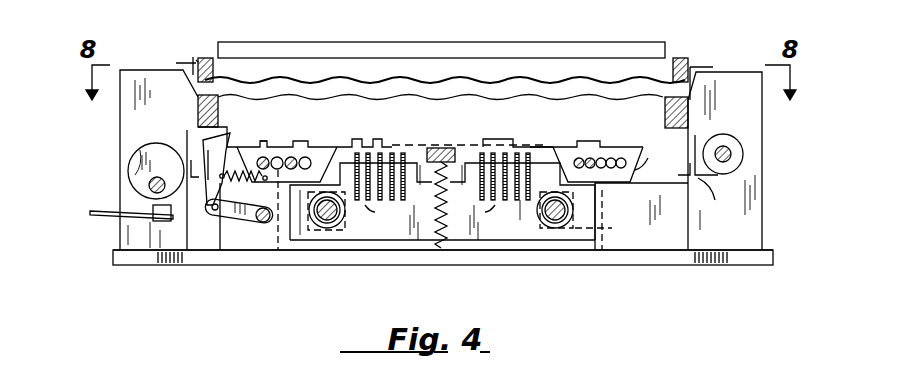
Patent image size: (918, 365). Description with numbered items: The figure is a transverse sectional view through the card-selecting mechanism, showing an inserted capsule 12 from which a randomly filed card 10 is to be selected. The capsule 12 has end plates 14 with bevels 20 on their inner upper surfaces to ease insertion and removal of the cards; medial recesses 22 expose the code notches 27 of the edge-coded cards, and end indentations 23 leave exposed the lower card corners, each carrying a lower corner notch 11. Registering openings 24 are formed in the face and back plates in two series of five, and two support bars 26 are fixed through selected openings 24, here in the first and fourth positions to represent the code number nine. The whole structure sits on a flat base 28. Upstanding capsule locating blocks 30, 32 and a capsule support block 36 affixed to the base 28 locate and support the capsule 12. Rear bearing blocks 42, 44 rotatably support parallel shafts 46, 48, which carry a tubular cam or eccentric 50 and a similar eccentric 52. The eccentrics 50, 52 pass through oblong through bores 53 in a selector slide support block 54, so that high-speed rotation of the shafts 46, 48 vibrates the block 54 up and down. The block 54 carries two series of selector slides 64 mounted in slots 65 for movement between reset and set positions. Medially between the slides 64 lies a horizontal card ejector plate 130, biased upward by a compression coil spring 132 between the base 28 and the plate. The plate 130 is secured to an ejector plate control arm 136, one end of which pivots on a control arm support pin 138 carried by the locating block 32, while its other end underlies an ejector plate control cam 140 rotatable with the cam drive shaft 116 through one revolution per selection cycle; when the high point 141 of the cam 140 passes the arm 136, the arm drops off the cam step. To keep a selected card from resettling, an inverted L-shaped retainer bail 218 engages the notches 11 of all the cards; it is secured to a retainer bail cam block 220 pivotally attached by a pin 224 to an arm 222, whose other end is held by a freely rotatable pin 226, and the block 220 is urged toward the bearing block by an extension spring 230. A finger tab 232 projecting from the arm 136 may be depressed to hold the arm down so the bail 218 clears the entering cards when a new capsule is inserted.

The card 10 is at (362, 42).
The lower corner notch 11 is at (262, 141).
The capsule 12 is at (196, 56).
The end plates 14 is at (193, 58).
The bevels 20 is at (208, 58).
The medial recesses 22 is at (548, 146).
The end indentations 23 is at (266, 145).
The registering openings 24 is at (612, 158).
The support bars 26 is at (284, 158).
The notches 27 is at (268, 146).
The flat base 28 is at (622, 256).
The capsule locating block 30 is at (115, 240).
The capsule locating block 32 is at (748, 219).
The capsule support block 36 is at (662, 244).
The rear bearing block 42 is at (378, 243).
The rear bearing block 44 is at (610, 228).
The shaft 46 is at (327, 228).
The shaft 48 is at (550, 228).
The tubular cam or eccentric 50 is at (340, 230).
The eccentric 52 is at (562, 228).
The through bores 53 is at (310, 228).
The selector slide support block 54 is at (507, 241).
The selector slides 64 is at (404, 152).
The slots 65 is at (437, 218).
The cam drive shaft 116 is at (149, 185).
The card ejector plate 130 is at (441, 148).
The compression coil spring 132 is at (445, 250).
The ejector plate control arm 136 is at (433, 211).
The control arm support pin 138 is at (723, 134).
The ejector plate control cam 140 is at (130, 158).
The high point 141 is at (130, 170).
The retainer bail 218 is at (206, 140).
The retainer bail cam block 220 is at (186, 157).
The arm 222 is at (270, 222).
The pin 224 is at (215, 210).
The pin 226 is at (265, 222).
The extension spring 230 is at (232, 216).
The finger tab 232 is at (100, 214).